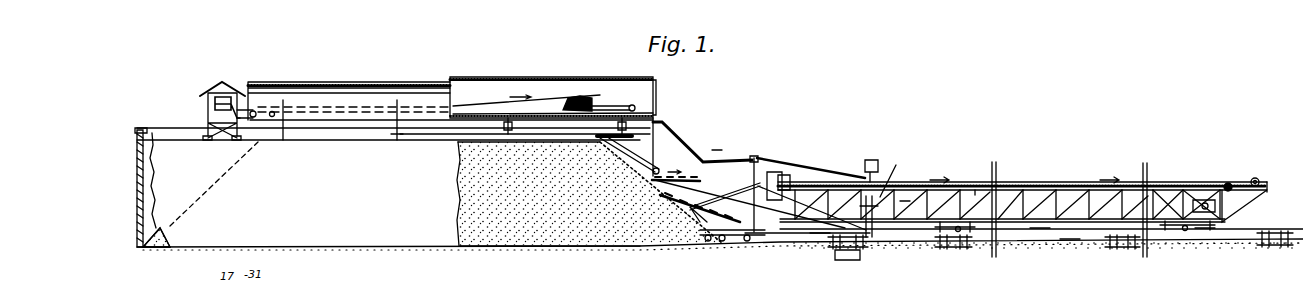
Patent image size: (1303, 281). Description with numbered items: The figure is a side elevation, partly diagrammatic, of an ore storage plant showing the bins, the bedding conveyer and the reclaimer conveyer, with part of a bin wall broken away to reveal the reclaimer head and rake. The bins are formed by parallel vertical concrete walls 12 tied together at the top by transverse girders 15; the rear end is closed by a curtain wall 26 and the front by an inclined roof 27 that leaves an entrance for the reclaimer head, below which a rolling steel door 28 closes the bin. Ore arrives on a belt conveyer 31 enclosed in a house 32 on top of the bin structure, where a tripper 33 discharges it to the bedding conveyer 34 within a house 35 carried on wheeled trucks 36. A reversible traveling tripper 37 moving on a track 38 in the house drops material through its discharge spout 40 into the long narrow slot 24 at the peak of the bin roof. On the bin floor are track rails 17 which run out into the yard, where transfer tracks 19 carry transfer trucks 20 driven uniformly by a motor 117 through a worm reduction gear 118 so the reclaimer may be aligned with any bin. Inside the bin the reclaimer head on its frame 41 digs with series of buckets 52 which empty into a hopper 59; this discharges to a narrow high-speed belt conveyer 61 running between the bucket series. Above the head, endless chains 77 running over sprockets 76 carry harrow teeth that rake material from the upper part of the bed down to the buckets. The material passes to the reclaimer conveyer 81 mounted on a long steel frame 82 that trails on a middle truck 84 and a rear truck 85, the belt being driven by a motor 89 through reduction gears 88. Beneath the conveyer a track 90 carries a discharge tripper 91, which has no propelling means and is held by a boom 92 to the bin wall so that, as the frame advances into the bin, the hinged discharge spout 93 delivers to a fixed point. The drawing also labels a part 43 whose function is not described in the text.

The parallel vertical wall 12 is at (715, 144).
The transverse girder 15 is at (410, 135).
The track rail 17 is at (1068, 242).
The transfer track 19 is at (1052, 250).
The transfer truck 20 is at (868, 252).
The slot 24 is at (583, 122).
The curtain wall 26 is at (160, 190).
The inclined roof 27 is at (690, 148).
The rolling steel door 28 is at (752, 156).
The conveyer 31 is at (208, 103).
The house 32 is at (226, 95).
The tripper 33 is at (212, 90).
The bedding conveyer 34 is at (487, 102).
The house 35 is at (400, 82).
The wheeled truck 36 is at (396, 136).
The reversible traveling tripper 37 is at (580, 95).
The track 38 is at (666, 97).
The discharge spout 40 is at (596, 104).
The frame 41 is at (786, 238).
The rod 43 is at (935, 209).
The bucket 52 is at (676, 167).
The hopper 59 is at (738, 181).
The belt conveyer 61 is at (700, 207).
The sprocket 76 is at (566, 280).
The endless chain 77 is at (640, 145).
The reclaimer conveyer 81 is at (1010, 172).
The frame 82 is at (975, 190).
The middle truck 84 is at (1015, 232).
The rear truck 85 is at (1175, 232).
The reduction gears 88 is at (1258, 175).
The motor 89 is at (1228, 183).
The track 90 is at (898, 173).
The discharge tripper 91 is at (868, 160).
The boom 92 is at (800, 170).
The discharge spout 93 is at (886, 216).
The motor 117 is at (1240, 205).
The worm reduction gear 118 is at (1200, 202).